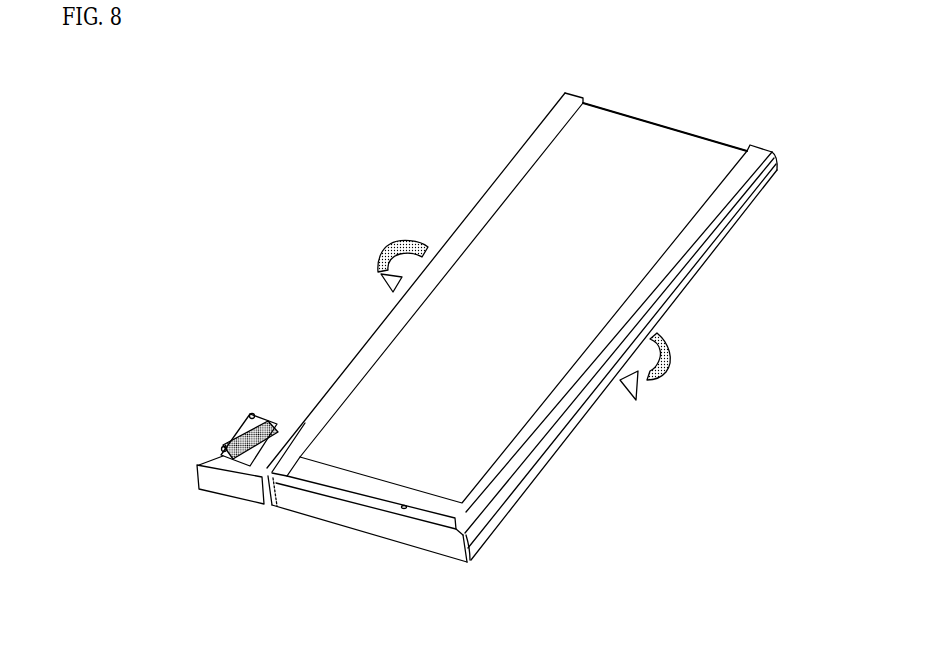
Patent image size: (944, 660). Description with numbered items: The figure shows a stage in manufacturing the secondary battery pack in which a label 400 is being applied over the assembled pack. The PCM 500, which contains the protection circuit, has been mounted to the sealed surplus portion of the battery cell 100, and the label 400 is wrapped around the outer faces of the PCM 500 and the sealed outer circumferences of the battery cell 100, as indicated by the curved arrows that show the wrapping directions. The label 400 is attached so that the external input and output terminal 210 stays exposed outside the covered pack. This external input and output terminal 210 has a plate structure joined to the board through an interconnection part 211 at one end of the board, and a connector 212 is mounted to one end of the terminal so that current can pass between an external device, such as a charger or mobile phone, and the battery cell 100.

The battery cell 100 is at (652, 113).
The label 400 is at (669, 290).
The PCM 500 is at (357, 528).
The external input and output terminal 210 is at (125, 412).
The interconnection part 211 is at (200, 483).
The connector 212 is at (246, 436).